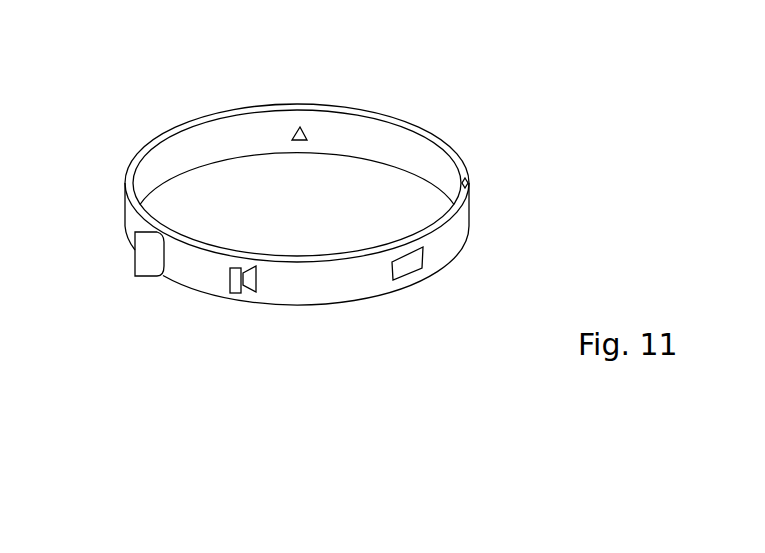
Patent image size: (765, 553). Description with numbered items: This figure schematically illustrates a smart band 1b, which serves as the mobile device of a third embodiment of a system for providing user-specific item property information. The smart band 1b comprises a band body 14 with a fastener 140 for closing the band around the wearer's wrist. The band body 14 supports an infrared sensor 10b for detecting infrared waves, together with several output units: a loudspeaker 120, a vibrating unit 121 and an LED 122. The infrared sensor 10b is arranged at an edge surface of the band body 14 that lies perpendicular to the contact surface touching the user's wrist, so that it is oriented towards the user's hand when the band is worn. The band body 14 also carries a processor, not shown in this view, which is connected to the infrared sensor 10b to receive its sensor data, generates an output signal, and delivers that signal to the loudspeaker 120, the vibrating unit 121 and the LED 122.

The smart band 1b is at (122, 68).
The band body 14 is at (123, 207).
The fastener 140 is at (137, 276).
The loudspeaker 120 is at (243, 273).
The vibrating unit 121 is at (300, 127).
The LED 122 is at (413, 272).
The infrared sensor 10b is at (468, 183).